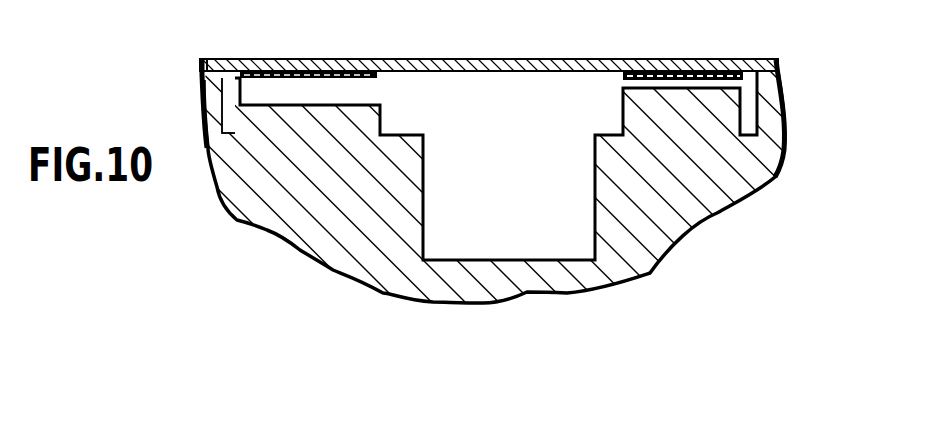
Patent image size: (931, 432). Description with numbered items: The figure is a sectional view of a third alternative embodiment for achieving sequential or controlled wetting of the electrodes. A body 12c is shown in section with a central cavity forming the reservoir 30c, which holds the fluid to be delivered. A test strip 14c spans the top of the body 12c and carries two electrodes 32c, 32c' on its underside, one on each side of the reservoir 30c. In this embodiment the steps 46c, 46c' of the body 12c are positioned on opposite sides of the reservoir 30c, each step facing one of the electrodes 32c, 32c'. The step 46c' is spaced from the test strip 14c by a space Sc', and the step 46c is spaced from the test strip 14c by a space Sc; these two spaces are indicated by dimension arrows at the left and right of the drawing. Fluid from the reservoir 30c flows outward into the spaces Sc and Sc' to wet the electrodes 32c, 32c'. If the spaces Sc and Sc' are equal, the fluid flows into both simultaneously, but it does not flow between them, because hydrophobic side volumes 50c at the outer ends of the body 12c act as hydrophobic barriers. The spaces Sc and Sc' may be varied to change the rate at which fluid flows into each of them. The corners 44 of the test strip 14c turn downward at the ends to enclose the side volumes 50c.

The container body 12c is at (343, 270).
The test strip 14c is at (489, 61).
The reservoir 30c is at (537, 230).
The electrode 32c is at (683, 46).
The electrode 32c' is at (308, 44).
The lid flange corner 44 is at (213, 59).
The step 46c is at (643, 105).
The step 46c' is at (341, 105).
The hydrophobic volume 50c is at (216, 152).
The space Sc is at (817, 66).
The space Sc' is at (193, 73).